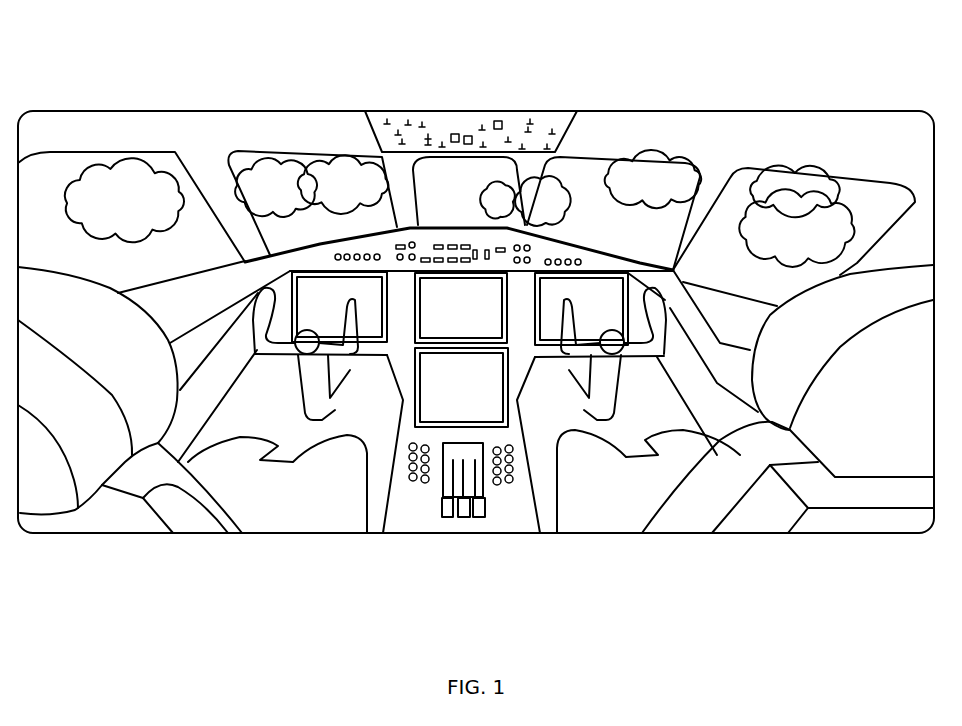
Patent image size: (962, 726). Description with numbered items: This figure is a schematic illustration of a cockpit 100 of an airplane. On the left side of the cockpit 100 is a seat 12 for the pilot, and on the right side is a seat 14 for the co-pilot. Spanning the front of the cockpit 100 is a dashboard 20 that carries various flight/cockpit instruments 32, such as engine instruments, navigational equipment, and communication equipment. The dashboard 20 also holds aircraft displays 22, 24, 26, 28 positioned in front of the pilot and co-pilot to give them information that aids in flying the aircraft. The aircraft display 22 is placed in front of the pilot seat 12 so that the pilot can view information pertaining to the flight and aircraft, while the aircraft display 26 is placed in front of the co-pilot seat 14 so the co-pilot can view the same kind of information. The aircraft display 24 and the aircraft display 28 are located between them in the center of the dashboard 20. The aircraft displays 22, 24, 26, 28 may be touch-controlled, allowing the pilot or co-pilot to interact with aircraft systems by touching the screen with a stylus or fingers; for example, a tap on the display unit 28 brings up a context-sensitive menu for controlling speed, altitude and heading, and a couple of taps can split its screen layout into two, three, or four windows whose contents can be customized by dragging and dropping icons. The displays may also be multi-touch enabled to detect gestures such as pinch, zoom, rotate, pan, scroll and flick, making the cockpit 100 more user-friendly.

The cockpit 100 is at (66, 72).
The seat 12 is at (100, 312).
The seat 14 is at (803, 328).
The dashboard 20 is at (233, 287).
The aircraft display 22 is at (312, 293).
The aircraft display 24 is at (448, 317).
The aircraft display 26 is at (605, 292).
The aircraft display 28 is at (477, 403).
The flight/cockpit instruments 32 is at (332, 258).